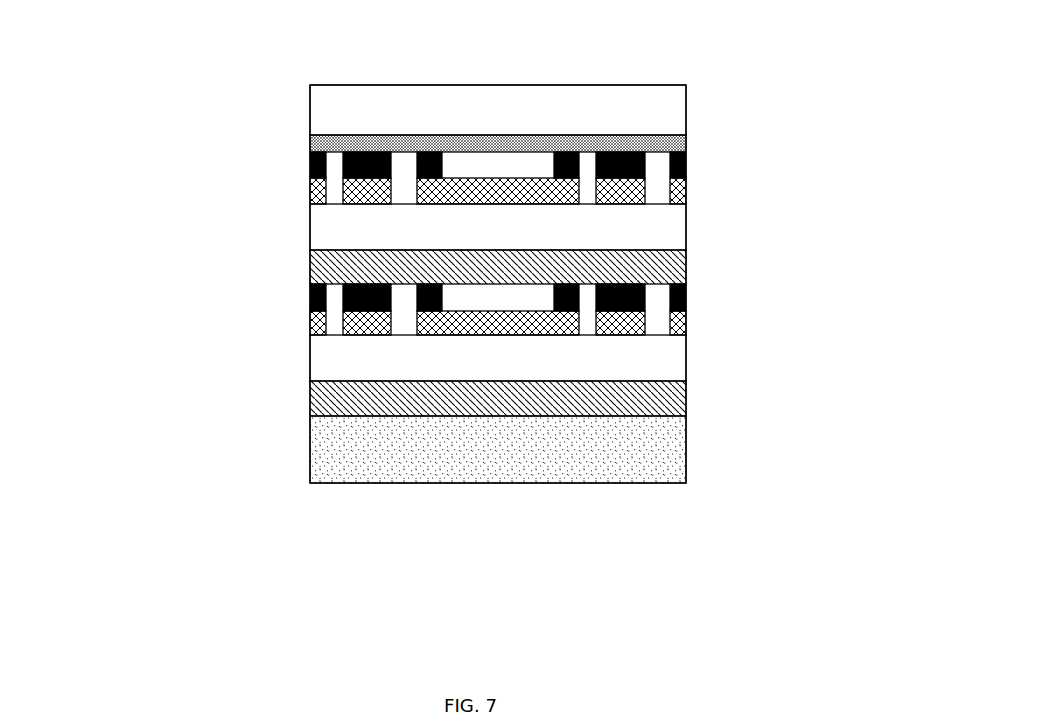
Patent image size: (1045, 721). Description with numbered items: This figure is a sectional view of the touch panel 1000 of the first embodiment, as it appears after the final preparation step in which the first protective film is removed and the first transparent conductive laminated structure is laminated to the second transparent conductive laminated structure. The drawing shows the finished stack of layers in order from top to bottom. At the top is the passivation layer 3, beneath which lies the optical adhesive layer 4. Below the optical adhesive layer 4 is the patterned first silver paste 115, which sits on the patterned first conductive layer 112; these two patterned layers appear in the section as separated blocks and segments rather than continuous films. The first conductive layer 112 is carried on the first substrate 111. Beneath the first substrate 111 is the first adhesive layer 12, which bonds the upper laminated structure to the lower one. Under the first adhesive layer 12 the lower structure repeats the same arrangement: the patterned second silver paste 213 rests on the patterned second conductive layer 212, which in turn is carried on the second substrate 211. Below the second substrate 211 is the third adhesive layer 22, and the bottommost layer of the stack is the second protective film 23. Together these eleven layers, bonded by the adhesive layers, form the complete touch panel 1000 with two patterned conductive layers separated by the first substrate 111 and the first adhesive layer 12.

The touch panel 1000 is at (727, 23).
The passivation layer 3 is at (686, 98).
The optical adhesive layer 4 is at (686, 133).
The first silver paste 115 is at (686, 151).
The first conductive layer 112 is at (686, 182).
The first substrate 111 is at (686, 222).
The first adhesive layer 12 is at (686, 262).
The second silver paste 213 is at (309, 292).
The second conductive layer 212 is at (686, 318).
The second substrate 211 is at (686, 358).
The third adhesive layer 22 is at (686, 398).
The second protective film 23 is at (686, 449).